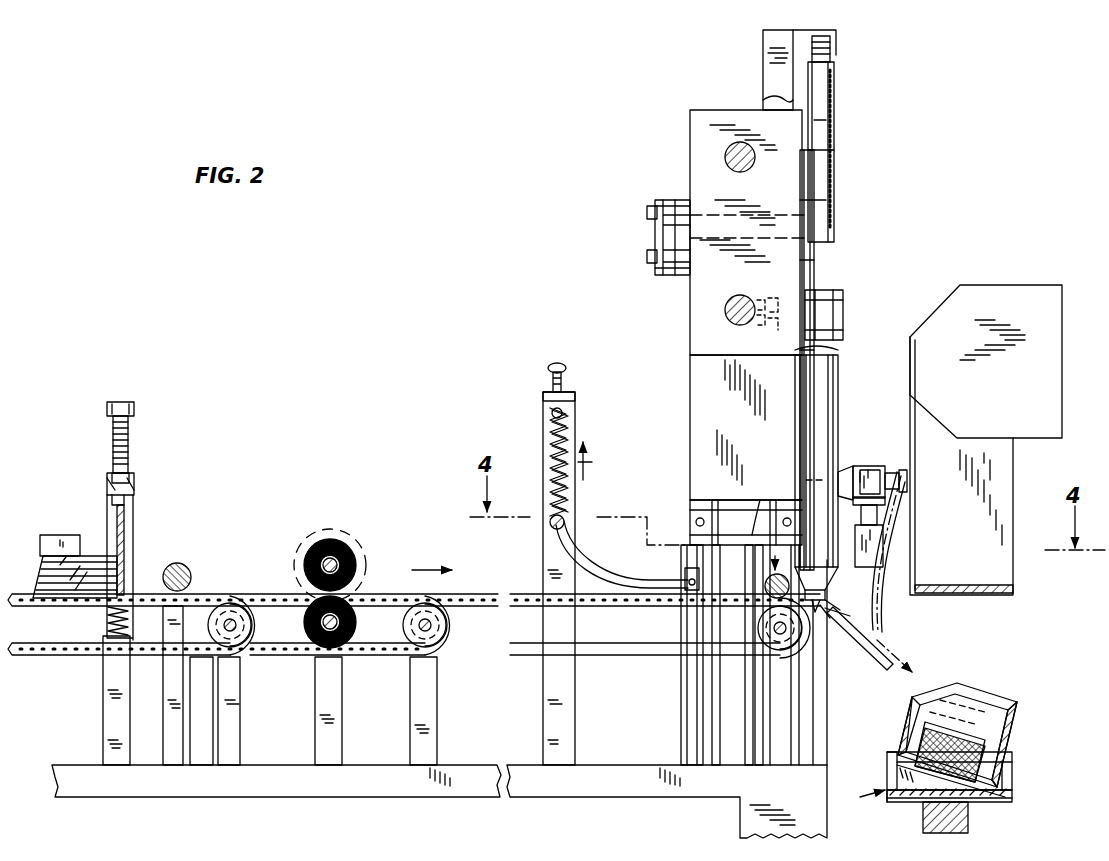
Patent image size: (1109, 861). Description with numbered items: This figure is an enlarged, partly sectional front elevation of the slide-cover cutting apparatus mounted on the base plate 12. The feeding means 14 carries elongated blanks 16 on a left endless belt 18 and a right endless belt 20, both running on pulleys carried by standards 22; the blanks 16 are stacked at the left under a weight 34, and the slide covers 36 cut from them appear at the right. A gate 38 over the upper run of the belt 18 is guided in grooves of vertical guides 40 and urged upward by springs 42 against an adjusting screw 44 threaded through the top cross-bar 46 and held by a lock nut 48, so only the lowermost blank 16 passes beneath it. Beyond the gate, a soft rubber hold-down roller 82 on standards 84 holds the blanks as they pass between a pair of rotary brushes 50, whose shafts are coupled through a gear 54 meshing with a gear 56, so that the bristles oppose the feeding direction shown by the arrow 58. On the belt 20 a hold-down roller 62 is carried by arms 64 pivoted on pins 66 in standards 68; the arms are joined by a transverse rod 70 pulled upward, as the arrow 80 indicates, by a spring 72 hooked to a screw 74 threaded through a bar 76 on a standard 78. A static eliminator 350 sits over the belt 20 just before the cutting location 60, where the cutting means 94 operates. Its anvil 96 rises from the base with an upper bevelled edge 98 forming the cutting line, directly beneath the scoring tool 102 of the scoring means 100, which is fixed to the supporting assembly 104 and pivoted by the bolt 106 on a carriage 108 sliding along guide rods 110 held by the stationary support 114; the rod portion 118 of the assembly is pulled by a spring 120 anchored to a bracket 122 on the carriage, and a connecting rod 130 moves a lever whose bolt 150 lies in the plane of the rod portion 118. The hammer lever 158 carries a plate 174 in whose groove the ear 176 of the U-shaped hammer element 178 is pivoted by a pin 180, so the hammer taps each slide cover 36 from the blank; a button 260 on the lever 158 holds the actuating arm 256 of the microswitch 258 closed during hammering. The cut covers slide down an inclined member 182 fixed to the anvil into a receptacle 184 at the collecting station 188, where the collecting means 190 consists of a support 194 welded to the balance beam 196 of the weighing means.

The base plate 12 is at (445, 796).
The feeding means 14 is at (92, 665).
The elongated blanks 16 is at (48, 575).
The left endless belt 18 is at (148, 650).
The right endless belt 20 is at (608, 658).
The standards 22 is at (242, 712).
The weight 34 is at (70, 515).
The slide covers 36 is at (908, 690).
The gate 38 is at (124, 528).
The guides 40 is at (133, 548).
The springs 42 is at (106, 620).
The adjusting screw 44 is at (130, 443).
The top cross-bar 46 is at (134, 492).
The lock nut 48 is at (110, 478).
The rotary brushes 50 is at (340, 540).
The gear 54 is at (322, 532).
The gear 56 is at (310, 640).
The arrow 58 is at (420, 567).
The cutting location 60 is at (828, 612).
The hold-down roller 62 is at (765, 580).
The arms 64 is at (618, 580).
The pins 66 is at (686, 575).
The standards 68 is at (690, 724).
The transverse rod 70 is at (550, 528).
The spring 72 is at (562, 425).
The screw 74 is at (568, 370).
The bar 76 is at (578, 398).
The standard 78 is at (575, 722).
The arrow 80 is at (602, 461).
The hold-down roller 82 is at (190, 572).
The standards 84 is at (165, 727).
The cutting means 94 is at (845, 368).
The anvil 96 is at (827, 722).
The upper bevelled edge 98 is at (850, 665).
The scoring means 100 is at (850, 405).
The scoring tool 102 is at (828, 588).
The supporting assembly 104 is at (800, 388).
The pivot bolt 106 is at (840, 305).
The carriage 108 is at (695, 325).
The guide rods 110 is at (727, 322).
The stationary support 114 is at (690, 376).
The rod portion 118 is at (836, 118).
The spring 120 is at (832, 42).
The bracket 122 is at (775, 30).
The connecting rod 130 is at (660, 235).
The bolt 150 is at (830, 242).
The lever 158 is at (858, 468).
The plate 174 is at (885, 470).
The ear 176 is at (877, 518).
The hammer element 178 is at (883, 550).
The pin 180 is at (885, 500).
The inclined member 182 is at (855, 672).
The receptacle 184 is at (1017, 716).
The collecting station 188 is at (1020, 767).
The collecting means 190 is at (856, 798).
The support 194 is at (1012, 792).
The balance beam 196 is at (925, 828).
The actuating arm 256 is at (885, 610).
The microswitch 258 is at (990, 383).
The button 260 is at (907, 478).
The static eliminator 350 is at (765, 505).